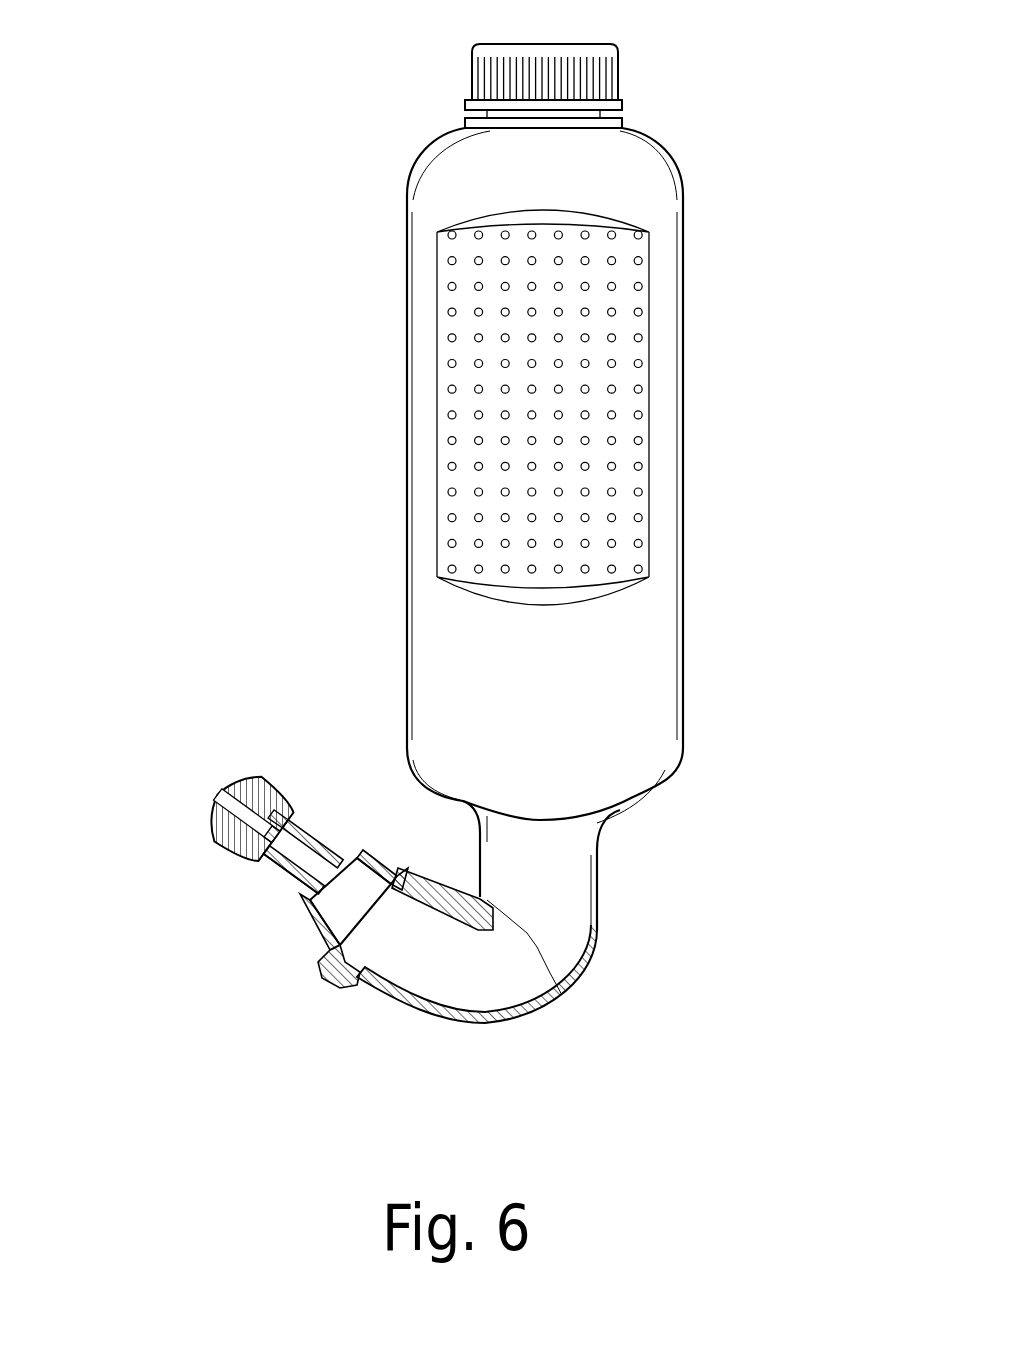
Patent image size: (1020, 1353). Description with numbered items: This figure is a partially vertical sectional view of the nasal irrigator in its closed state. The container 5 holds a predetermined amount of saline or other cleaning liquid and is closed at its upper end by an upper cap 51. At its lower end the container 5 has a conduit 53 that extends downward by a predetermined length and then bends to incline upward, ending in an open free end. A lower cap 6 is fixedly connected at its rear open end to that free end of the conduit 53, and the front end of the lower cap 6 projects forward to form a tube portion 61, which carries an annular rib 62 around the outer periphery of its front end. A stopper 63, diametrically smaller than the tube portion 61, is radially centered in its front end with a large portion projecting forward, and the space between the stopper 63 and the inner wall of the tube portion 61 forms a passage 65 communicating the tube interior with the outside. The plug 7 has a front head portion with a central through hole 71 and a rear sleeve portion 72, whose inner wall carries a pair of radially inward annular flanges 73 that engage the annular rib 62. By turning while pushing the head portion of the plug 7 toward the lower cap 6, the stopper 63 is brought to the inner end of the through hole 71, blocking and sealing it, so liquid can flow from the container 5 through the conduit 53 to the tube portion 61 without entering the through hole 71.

The container 5 is at (628, 780).
The upper cap 51 is at (615, 50).
The conduit 53 is at (452, 1017).
The lower cap 6 is at (320, 960).
The tube portion 61 is at (290, 888).
The annular rib 62 is at (298, 818).
The stopper 63 is at (282, 800).
The passage 65 is at (263, 845).
The plug 7 is at (224, 828).
The central through hole 71 is at (228, 797).
The sleeve portion 72 is at (278, 882).
The annular flanges 73 is at (265, 870).